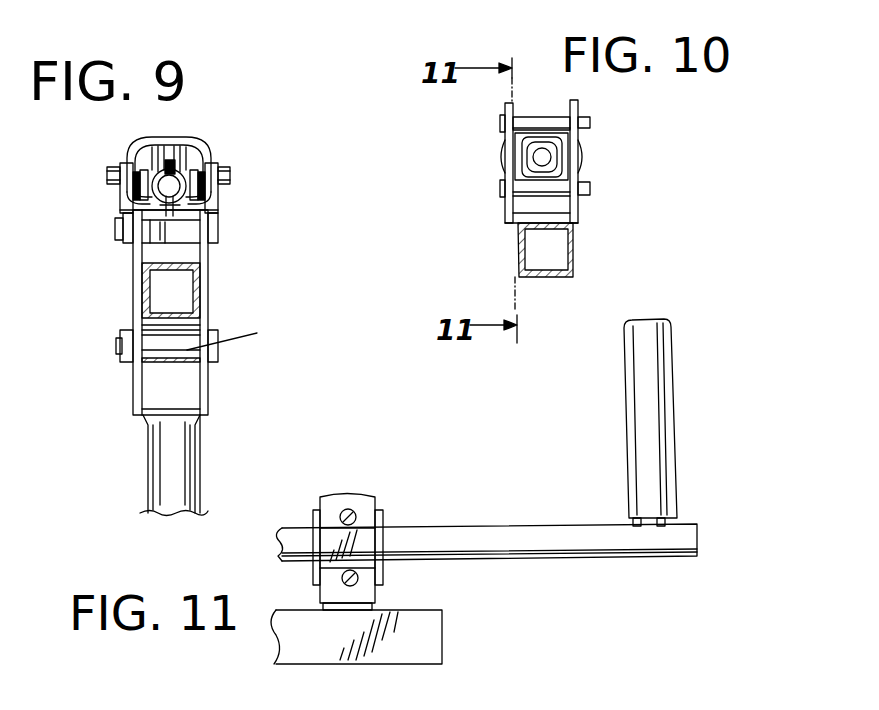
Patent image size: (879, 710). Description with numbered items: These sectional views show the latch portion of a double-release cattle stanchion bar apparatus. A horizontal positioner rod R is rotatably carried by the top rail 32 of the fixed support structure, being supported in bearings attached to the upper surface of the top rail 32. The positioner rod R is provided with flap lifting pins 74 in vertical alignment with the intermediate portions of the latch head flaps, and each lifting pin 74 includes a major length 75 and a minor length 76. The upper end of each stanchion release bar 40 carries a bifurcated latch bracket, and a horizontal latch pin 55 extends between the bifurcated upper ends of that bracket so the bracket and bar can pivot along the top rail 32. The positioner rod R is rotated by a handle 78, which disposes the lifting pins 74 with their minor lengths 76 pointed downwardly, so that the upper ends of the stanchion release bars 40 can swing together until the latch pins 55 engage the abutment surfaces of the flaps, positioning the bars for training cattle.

In FIG. 9, the major length 75 is at (198, 160).
In FIG. 9, the flap lifting pin 74 is at (222, 185).
In FIG. 10, the flap lifting pin 74 is at (545, 161).
In FIG. 11, the flap lifting pin 74 is at (348, 552).
In FIG. 9, the minor length 76 is at (206, 210).
In FIG. 10, the minor length 76 is at (542, 157).
In FIG. 9, the latch pin 55 is at (190, 229).
In FIG. 10, the latch pin 55 is at (541, 170).
In FIG. 9, the top rail 32 is at (200, 300).
In FIG. 10, the top rail 32 is at (545, 250).
In FIG. 11, the top rail 32 is at (422, 637).
In FIG. 9, the stanchion release bar 40 is at (183, 460).
In FIG. 11, the handle 78 is at (648, 395).
In FIG. 11, the positioner rod R is at (580, 540).